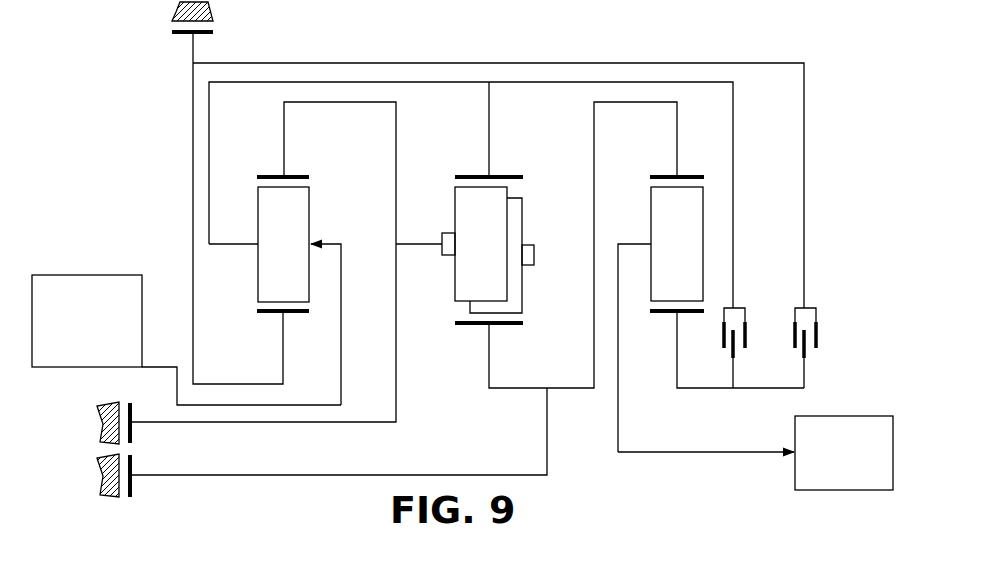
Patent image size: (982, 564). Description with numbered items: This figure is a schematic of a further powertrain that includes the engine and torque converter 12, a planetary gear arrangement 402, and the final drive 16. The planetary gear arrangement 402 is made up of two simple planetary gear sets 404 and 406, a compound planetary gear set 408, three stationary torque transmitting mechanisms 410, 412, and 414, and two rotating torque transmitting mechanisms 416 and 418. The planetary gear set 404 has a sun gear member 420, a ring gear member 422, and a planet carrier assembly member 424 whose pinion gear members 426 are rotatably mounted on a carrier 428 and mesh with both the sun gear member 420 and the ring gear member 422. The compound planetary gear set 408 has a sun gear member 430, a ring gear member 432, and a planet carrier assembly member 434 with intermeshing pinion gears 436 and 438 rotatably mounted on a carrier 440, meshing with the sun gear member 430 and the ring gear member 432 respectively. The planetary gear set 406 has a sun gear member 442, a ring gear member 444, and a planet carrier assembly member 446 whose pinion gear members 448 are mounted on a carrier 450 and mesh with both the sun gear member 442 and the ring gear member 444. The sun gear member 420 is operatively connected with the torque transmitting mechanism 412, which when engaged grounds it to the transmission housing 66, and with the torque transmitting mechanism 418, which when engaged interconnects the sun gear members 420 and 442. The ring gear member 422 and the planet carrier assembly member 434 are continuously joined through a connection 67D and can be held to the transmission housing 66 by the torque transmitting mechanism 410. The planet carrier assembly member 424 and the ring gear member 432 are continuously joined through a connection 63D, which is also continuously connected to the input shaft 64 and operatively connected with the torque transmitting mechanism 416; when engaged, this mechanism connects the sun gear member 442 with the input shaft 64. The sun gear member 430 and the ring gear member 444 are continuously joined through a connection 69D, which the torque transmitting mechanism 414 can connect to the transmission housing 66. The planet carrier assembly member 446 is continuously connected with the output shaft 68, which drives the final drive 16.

The engine and torque converter 12 is at (95, 272).
The final drive 16 is at (846, 413).
The input shaft 64 is at (160, 367).
The transmission housing 66 is at (219, 28).
The output shaft 68 is at (693, 452).
The connection 63D is at (308, 80).
The connection 67D is at (352, 100).
The connection 69D is at (563, 388).
The planetary gear arrangement 402 is at (494, 228).
The planetary gear set 404 is at (292, 234).
The planetary gear set 406 is at (737, 243).
The compound planetary gear set 408 is at (531, 187).
The torque transmitting mechanism 410 is at (123, 400).
The torque transmitting mechanism 412 is at (183, 38).
The torque transmitting mechanism 414 is at (122, 502).
The torque transmitting mechanism 416 is at (744, 298).
The torque transmitting mechanism 418 is at (813, 298).
The sun gear member 420 is at (267, 315).
The ring gear member 422 is at (292, 177).
The planet carrier assembly member 424 is at (356, 273).
The pinion gear members 426 is at (303, 215).
The carrier 428 is at (228, 243).
The sun gear member 430 is at (470, 323).
The ring gear member 432 is at (478, 176).
The planet carrier assembly member 434 is at (531, 281).
The pinion gears 436 is at (470, 305).
The pinion gears 438 is at (466, 202).
The carrier 440 is at (418, 246).
The sun gear member 442 is at (663, 314).
The ring gear member 444 is at (667, 177).
The planet carrier assembly member 446 is at (719, 212).
The pinion gear members 448 is at (697, 257).
The carrier 450 is at (633, 243).